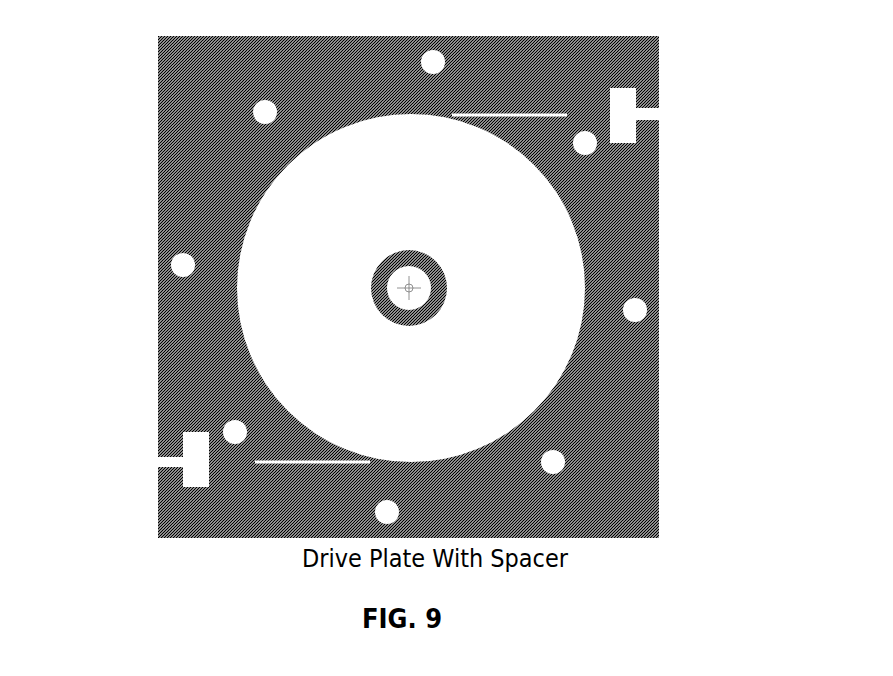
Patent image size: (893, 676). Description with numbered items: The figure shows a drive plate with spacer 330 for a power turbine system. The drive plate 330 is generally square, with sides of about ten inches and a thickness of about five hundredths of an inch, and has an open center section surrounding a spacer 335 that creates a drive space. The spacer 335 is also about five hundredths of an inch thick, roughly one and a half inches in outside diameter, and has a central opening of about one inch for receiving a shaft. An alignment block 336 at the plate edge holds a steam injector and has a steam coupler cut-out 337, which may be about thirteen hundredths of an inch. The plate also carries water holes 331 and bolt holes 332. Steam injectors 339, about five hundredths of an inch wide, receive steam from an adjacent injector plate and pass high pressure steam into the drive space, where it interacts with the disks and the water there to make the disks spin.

The drive plate with spacer 330 is at (787, 66).
The water holes 331 is at (590, 148).
The bolt holes 332 is at (643, 312).
The spacer 335 is at (420, 255).
The alignment block 336 is at (638, 96).
The steam coupler cut-out 337 is at (648, 113).
The steam injectors 339 is at (480, 110).